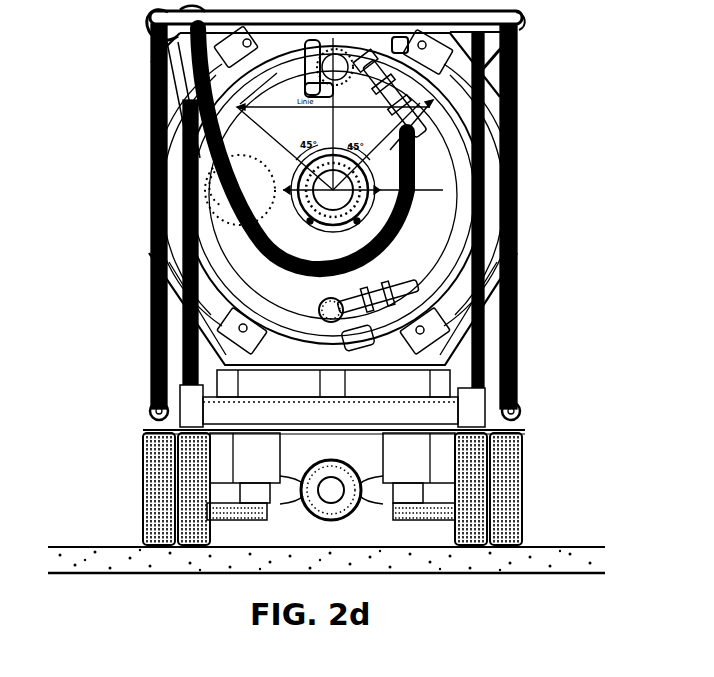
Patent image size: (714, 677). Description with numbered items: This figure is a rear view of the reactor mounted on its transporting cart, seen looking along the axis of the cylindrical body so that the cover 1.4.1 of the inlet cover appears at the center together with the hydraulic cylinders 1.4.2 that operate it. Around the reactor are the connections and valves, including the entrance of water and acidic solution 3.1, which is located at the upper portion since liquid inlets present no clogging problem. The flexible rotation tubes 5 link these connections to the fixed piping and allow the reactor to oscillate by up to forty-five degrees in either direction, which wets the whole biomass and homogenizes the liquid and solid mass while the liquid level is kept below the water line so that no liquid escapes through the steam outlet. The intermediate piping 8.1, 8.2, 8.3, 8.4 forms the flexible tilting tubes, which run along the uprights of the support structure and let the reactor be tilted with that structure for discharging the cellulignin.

The cover 1.4.1 is at (207, 193).
The hydraulic cylinders 1.4.2 is at (357, 224).
The entrance of water and acidic solution 3.1 is at (440, 68).
The flexible rotation tubes 5 is at (247, 236).
The intermediate piping 8.1 is at (178, 344).
The intermediate piping 8.2 is at (517, 353).
The intermediate piping 8.3 is at (163, 362).
The intermediate piping 8.4 is at (517, 331).